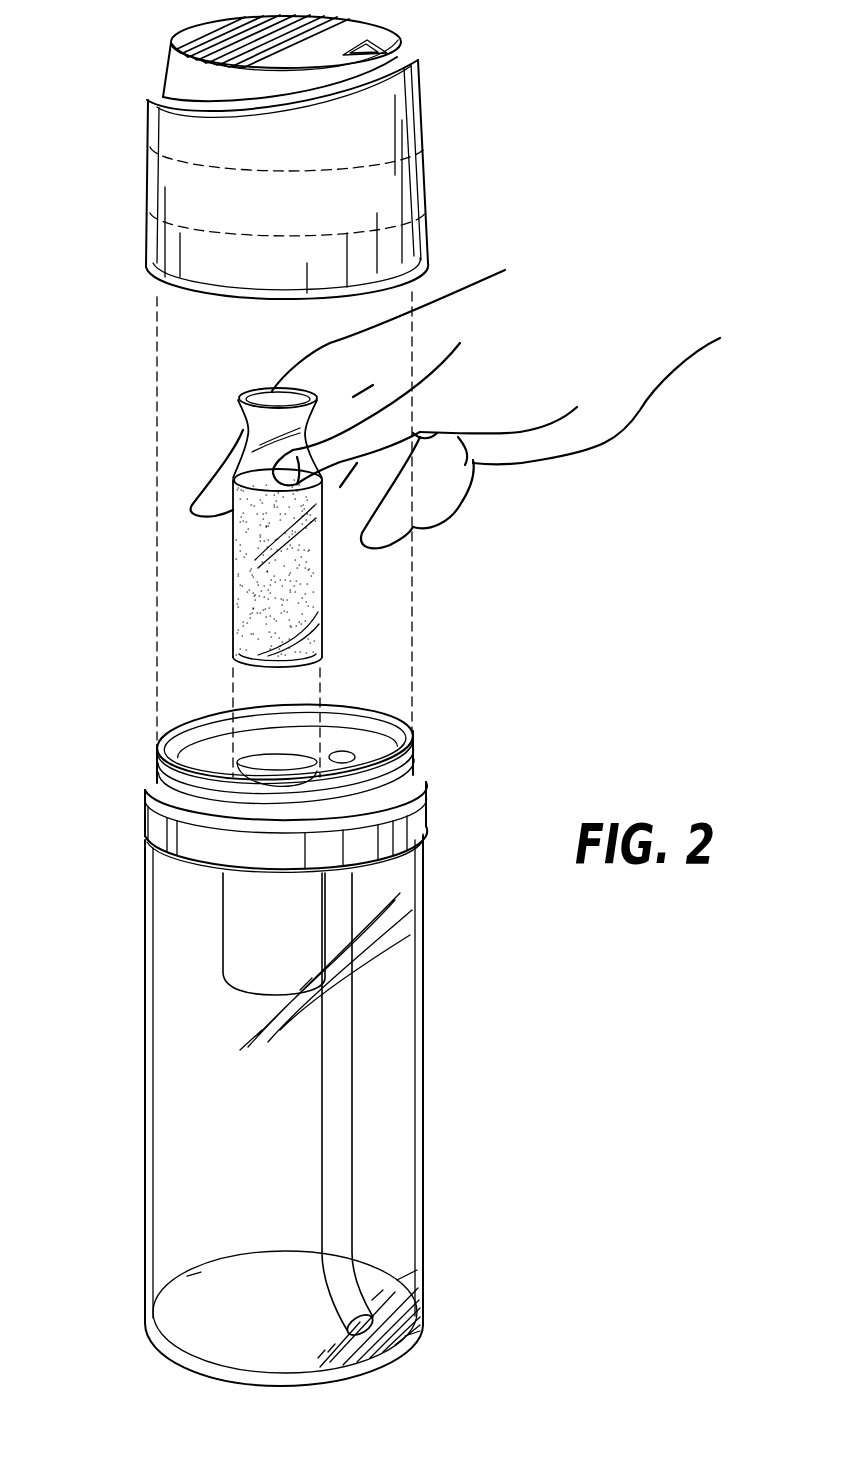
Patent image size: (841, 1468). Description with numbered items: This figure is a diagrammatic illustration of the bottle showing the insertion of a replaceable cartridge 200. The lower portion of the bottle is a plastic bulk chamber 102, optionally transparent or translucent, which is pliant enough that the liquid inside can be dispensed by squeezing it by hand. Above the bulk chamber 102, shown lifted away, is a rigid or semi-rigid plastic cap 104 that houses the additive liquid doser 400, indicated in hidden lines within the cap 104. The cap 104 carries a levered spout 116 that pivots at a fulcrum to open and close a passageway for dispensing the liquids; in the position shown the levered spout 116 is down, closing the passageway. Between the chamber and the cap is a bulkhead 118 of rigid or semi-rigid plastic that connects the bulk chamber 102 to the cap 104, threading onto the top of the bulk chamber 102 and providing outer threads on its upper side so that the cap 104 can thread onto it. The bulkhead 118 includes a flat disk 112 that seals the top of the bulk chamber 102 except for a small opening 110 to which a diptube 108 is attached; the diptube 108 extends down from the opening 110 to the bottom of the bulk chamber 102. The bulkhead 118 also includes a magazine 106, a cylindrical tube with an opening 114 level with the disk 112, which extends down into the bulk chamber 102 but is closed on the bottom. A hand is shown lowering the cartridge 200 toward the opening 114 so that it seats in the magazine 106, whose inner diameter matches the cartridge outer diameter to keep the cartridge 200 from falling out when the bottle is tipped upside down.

The bulk chamber 102 is at (145, 1090).
The cap 104 is at (420, 73).
The magazine 106 is at (223, 928).
The diptube 108 is at (347, 1215).
The opening 110 is at (348, 755).
The flat disk 112 is at (216, 752).
The opening 114 is at (277, 764).
The levered spout 116 is at (196, 28).
The bulkhead 118 is at (145, 795).
The replaceable cartridge 200 is at (233, 573).
The additive liquid doser 400 is at (425, 165).